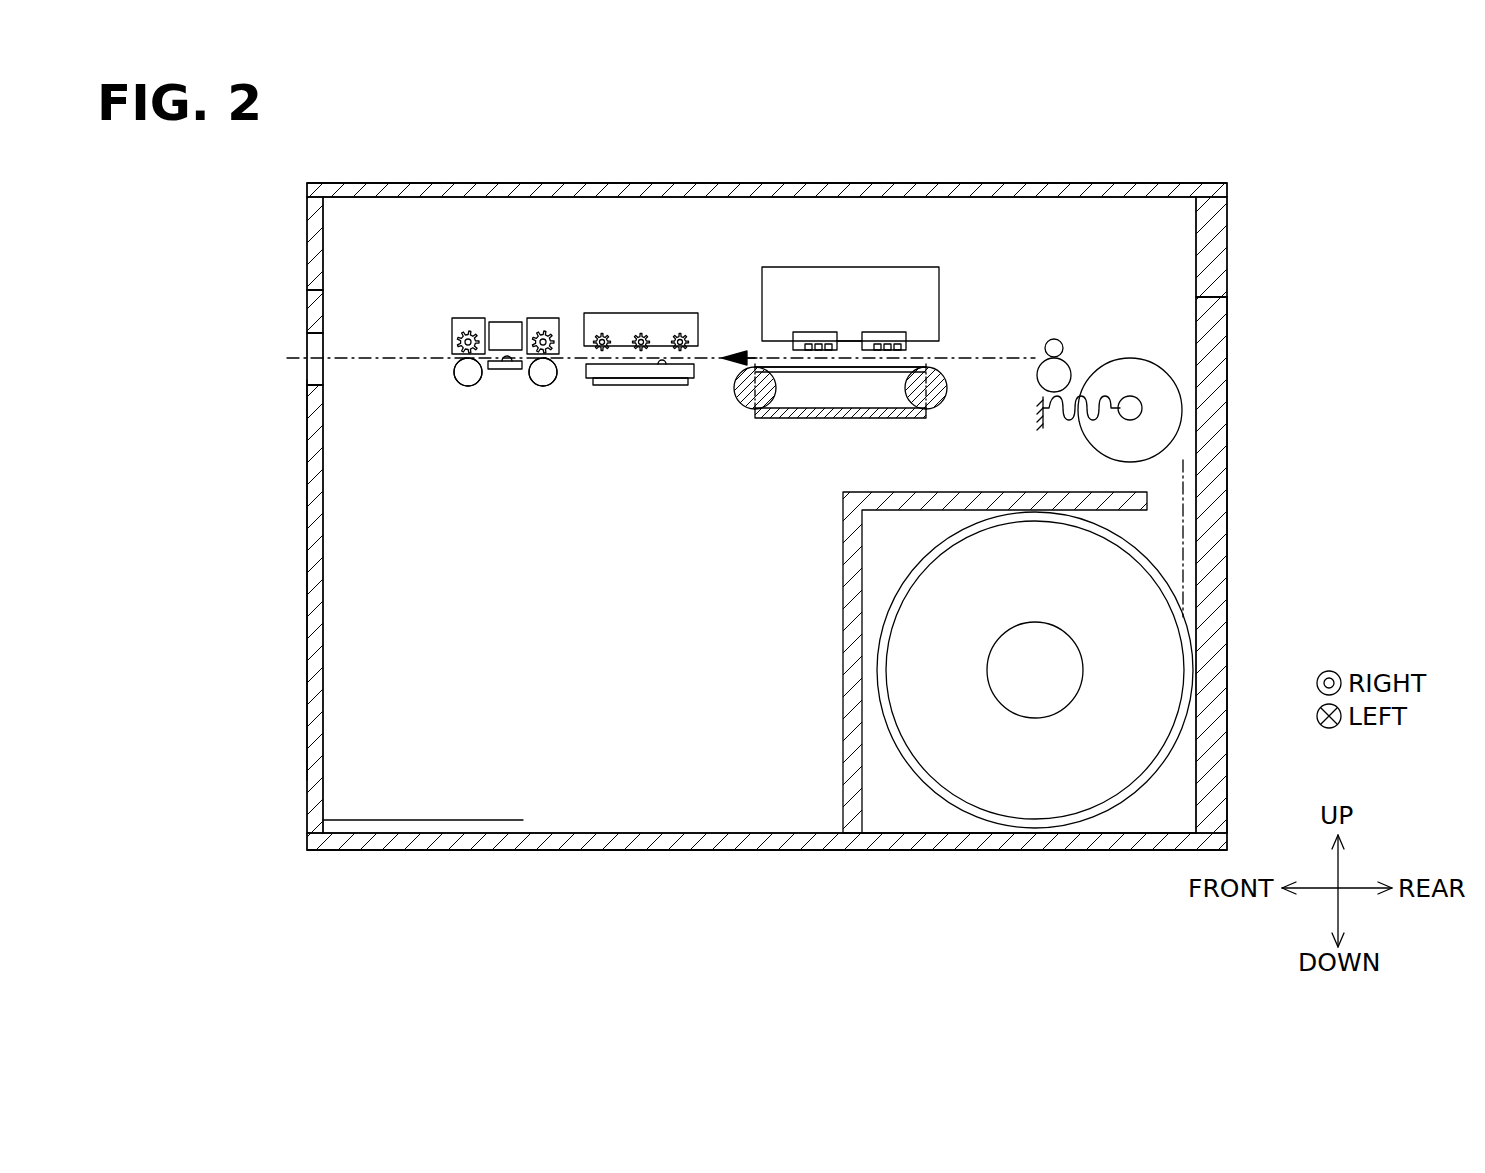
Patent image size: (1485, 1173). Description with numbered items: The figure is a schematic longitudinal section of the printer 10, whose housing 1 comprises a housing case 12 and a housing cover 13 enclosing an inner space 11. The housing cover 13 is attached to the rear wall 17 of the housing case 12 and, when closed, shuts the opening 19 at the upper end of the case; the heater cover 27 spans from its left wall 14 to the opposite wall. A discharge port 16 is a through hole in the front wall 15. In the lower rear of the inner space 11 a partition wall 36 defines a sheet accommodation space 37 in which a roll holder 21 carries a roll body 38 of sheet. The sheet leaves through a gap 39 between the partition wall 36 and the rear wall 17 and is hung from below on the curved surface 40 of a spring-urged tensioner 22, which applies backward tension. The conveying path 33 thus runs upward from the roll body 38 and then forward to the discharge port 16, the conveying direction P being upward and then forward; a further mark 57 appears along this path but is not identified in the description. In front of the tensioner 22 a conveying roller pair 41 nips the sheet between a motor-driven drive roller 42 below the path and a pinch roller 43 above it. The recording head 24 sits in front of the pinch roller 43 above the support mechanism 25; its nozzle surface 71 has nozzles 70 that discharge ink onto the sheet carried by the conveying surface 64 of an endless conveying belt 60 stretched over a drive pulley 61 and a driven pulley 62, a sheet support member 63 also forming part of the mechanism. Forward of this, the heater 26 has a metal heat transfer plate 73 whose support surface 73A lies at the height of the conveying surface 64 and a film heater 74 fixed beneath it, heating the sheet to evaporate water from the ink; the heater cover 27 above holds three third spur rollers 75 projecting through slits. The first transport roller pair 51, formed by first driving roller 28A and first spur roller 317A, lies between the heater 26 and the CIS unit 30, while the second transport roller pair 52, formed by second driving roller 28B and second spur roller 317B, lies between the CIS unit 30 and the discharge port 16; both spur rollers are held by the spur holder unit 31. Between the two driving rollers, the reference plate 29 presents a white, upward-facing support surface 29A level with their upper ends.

The housing 1 is at (1368, 267).
The printer 10 is at (372, 130).
The inner space 11 is at (425, 795).
The housing case 12 is at (1262, 337).
The housing cover 13 is at (1265, 268).
The left wall 14 is at (910, 228).
The front wall 15 is at (307, 540).
The discharge port 16 is at (297, 340).
The rear wall 17 is at (1227, 585).
The opening 19 is at (363, 288).
The roll holder 21 is at (1048, 703).
The tensioner 22 is at (1080, 452).
The recording head 24 is at (923, 265).
The support mechanism 25 is at (920, 418).
The heater 26 is at (622, 390).
The heater cover 27 is at (580, 320).
The first driving roller 28A is at (537, 386).
The second driving roller 28B is at (462, 386).
The reference plate 29 is at (496, 372).
The support surface 29A is at (510, 362).
The CIS unit 30 is at (503, 322).
The spur holder unit 31 is at (545, 320).
The first spur roller 317A is at (540, 320).
The second spur roller 317B is at (455, 345).
The conveying path 33 is at (987, 355).
The partition wall 36 is at (843, 492).
The sheet accommodation space 37 is at (1172, 801).
The roll body 38 is at (947, 788).
The gap 39 is at (1170, 492).
The curved surface 40 is at (1168, 365).
The conveying roller pair 41 is at (1105, 255).
The drive roller 42 is at (1063, 358).
The pinch roller 43 is at (1057, 340).
The first transport roller pair 51 is at (560, 365).
The second transport roller pair 52 is at (455, 362).
The conveyance direction 57 is at (712, 360).
The conveying belt 60 is at (800, 410).
The drive pulley 61 is at (748, 405).
The driven pulley 62 is at (940, 395).
The sheet support member 63 is at (870, 418).
The conveying surface 64 is at (905, 367).
The nozzles 70 is at (809, 346).
The nozzle surface 71 is at (838, 352).
The heat transfer plate 73 is at (697, 385).
The support surface 73A is at (664, 356).
The film heater 74 is at (644, 379).
The third spur roller 75 is at (600, 338).
The conveying direction P is at (748, 355).